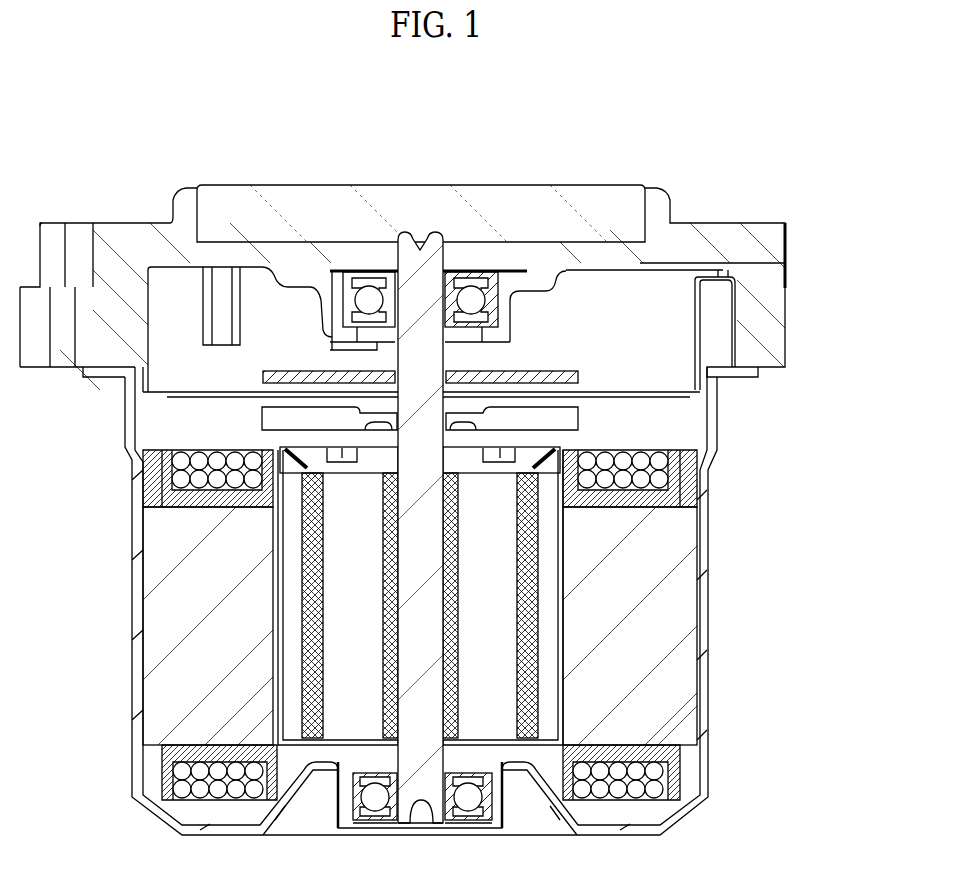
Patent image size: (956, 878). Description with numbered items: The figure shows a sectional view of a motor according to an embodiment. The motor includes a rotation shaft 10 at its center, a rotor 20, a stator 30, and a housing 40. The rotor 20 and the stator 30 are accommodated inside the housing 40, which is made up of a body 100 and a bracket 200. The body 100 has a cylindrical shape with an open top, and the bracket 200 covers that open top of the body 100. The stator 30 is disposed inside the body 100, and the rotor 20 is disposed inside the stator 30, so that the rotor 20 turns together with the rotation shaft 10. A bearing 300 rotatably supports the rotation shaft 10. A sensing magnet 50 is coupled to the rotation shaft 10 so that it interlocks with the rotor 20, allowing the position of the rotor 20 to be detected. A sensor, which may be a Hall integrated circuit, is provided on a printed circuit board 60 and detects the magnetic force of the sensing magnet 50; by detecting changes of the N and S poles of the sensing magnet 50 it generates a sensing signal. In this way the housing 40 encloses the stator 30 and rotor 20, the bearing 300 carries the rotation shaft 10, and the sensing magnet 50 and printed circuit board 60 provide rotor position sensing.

The rotation shaft 10 is at (424, 686).
The rotor 20 is at (508, 590).
The stator 30 is at (655, 553).
The housing 40 is at (722, 487).
The sensing magnet 50 is at (262, 408).
The printed circuit board 60 is at (262, 375).
The body 100 is at (712, 402).
The bracket 200 is at (790, 250).
The bearing 300 is at (461, 262).